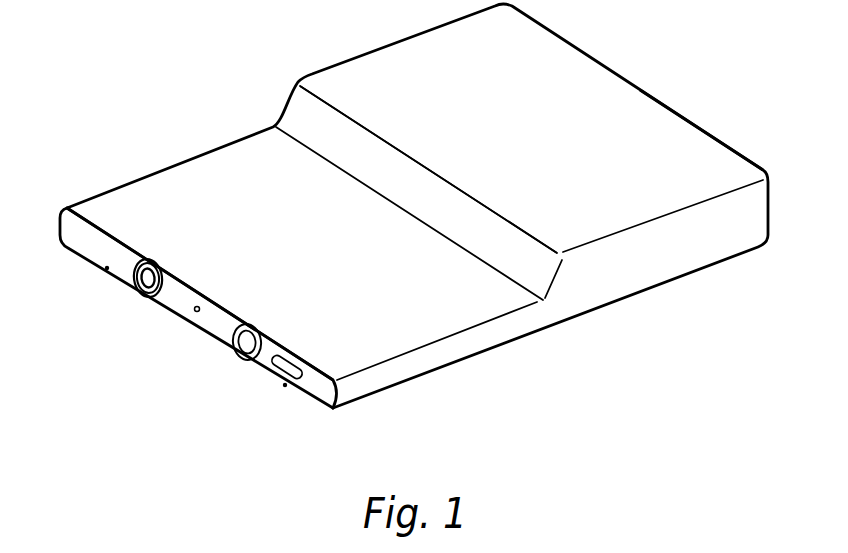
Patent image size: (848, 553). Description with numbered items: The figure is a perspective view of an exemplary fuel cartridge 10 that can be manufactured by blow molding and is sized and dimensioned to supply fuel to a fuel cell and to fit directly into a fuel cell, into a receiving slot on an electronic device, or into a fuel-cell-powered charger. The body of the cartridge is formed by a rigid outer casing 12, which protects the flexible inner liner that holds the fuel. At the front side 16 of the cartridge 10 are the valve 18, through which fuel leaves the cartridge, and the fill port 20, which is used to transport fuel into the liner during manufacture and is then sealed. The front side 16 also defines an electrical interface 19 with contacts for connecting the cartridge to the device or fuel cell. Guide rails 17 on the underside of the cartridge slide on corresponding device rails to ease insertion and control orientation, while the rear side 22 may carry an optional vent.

The fuel cartridge 10 is at (183, 113).
The outer casing 12 is at (529, 152).
The front side 16 is at (82, 245).
The guide rail 17 is at (107, 271).
The valve 18 is at (157, 300).
The electrical interface 19 is at (274, 378).
The fill port 20 is at (244, 352).
The rear side 22 is at (715, 133).